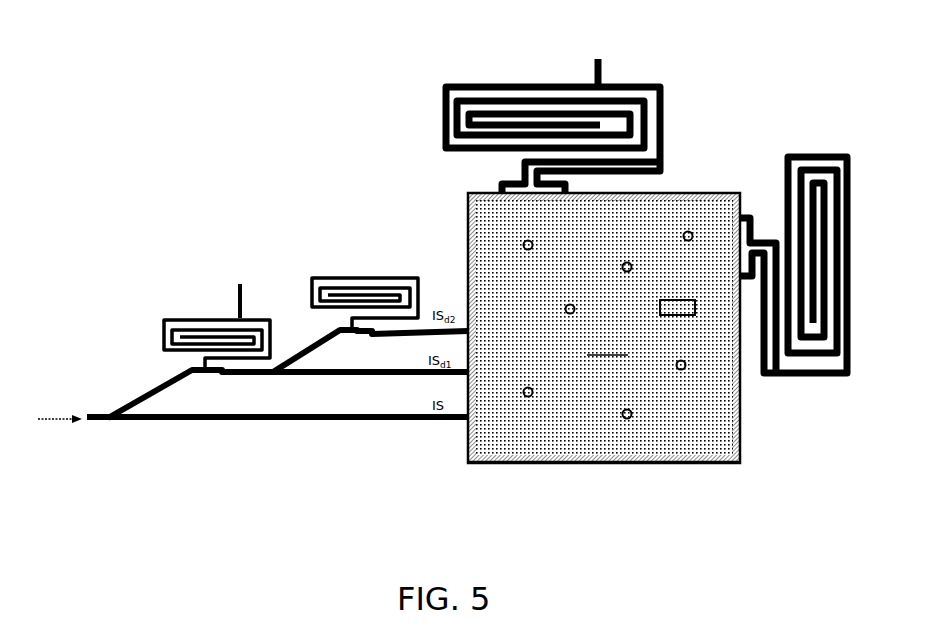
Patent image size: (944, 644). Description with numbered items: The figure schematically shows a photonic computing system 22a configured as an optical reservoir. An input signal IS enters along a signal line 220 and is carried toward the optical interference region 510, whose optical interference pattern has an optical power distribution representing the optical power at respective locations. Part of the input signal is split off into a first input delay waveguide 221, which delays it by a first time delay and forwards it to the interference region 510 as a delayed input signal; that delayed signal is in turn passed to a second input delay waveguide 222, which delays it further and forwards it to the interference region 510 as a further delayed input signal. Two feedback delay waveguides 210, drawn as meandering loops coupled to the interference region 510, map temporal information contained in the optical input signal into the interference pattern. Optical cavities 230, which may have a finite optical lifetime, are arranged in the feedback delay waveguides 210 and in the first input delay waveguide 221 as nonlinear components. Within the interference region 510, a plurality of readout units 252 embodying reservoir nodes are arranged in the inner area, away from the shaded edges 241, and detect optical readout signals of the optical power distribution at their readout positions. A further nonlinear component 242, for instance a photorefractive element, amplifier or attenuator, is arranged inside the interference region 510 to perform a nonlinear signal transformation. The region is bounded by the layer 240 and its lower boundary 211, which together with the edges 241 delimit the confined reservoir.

The feedback delay waveguide 210 is at (518, 84).
The lower electrode layer 211 is at (502, 465).
The input signal line 220 is at (277, 422).
The input delay waveguide 221 is at (213, 320).
The input delay waveguide 222 is at (373, 277).
The photonic computing system 22a is at (163, 460).
The optical cavity 230 is at (602, 58).
The substrate 240 is at (622, 330).
The edges of the optical interference region 241 is at (617, 465).
The nonlinear component 242 is at (675, 308).
The readout unit 252 is at (622, 267).
The optical interference region 510 is at (609, 344).